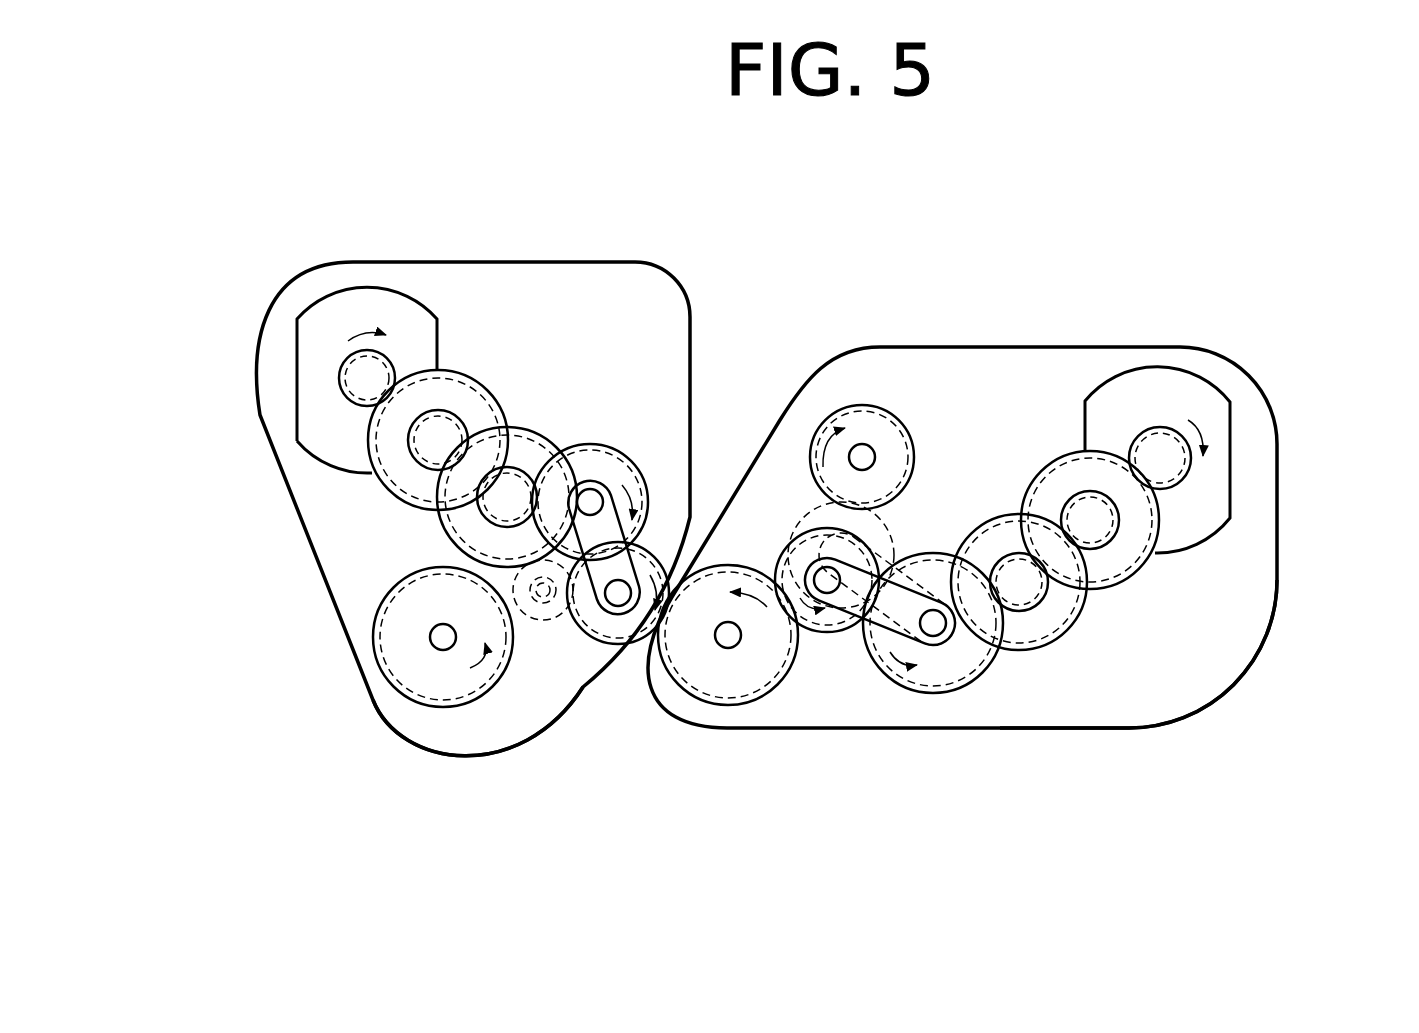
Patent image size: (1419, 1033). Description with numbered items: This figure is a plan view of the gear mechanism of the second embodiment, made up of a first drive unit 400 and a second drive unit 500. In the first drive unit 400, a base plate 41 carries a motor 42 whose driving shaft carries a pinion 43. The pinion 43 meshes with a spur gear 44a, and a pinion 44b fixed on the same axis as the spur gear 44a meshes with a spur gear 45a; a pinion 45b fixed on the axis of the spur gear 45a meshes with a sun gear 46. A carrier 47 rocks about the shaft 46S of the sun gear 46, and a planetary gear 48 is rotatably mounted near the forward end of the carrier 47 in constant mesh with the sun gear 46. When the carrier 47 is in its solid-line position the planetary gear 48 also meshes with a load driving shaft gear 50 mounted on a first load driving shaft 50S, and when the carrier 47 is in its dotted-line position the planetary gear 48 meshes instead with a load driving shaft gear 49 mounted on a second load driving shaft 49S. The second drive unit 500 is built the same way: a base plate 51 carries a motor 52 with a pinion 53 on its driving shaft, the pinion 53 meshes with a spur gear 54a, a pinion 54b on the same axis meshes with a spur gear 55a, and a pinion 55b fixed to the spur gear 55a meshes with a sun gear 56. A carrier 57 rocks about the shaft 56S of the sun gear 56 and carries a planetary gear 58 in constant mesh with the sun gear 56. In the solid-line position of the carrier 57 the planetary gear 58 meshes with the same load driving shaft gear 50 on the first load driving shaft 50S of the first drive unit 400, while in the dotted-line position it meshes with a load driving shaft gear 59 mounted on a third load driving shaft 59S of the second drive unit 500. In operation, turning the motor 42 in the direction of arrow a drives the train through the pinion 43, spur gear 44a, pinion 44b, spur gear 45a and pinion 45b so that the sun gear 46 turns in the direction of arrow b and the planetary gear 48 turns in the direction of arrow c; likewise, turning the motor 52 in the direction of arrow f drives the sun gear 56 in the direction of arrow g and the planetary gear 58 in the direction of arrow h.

The base plate 41 is at (1250, 418).
The motor 42 is at (1197, 397).
The pinion 43 is at (1158, 428).
The spur gear 44a is at (1147, 560).
The pinion 44b is at (1105, 545).
The spur gear 45a is at (1012, 553).
The pinion 45b is at (1005, 514).
The sun gear 46 is at (993, 668).
The shaft of the sun gear 46S is at (940, 645).
The carrier 47 is at (884, 640).
The planetary gear 48 is at (825, 632).
The load driving shaft gear 49 is at (860, 420).
The second load driving shaft 49S is at (867, 450).
The load driving shaft gear 50 is at (702, 673).
The first load driving shaft 50S is at (727, 650).
The base plate 51 is at (463, 283).
The motor 52 is at (345, 303).
The pinion 53 is at (340, 367).
The spur gear 54a is at (407, 480).
The pinion 54b is at (408, 441).
The spur gear 55a is at (495, 518).
The pinion 55b is at (477, 505).
The sun gear 56 is at (577, 440).
The shaft of the sun gear 56S is at (588, 497).
The carrier 57 is at (645, 510).
The planetary gear 58 is at (619, 632).
The load driving shaft gear 59 is at (400, 677).
The third load driving shaft 59S is at (430, 640).
The first drive unit 400 is at (1162, 726).
The second drive unit 500 is at (405, 738).